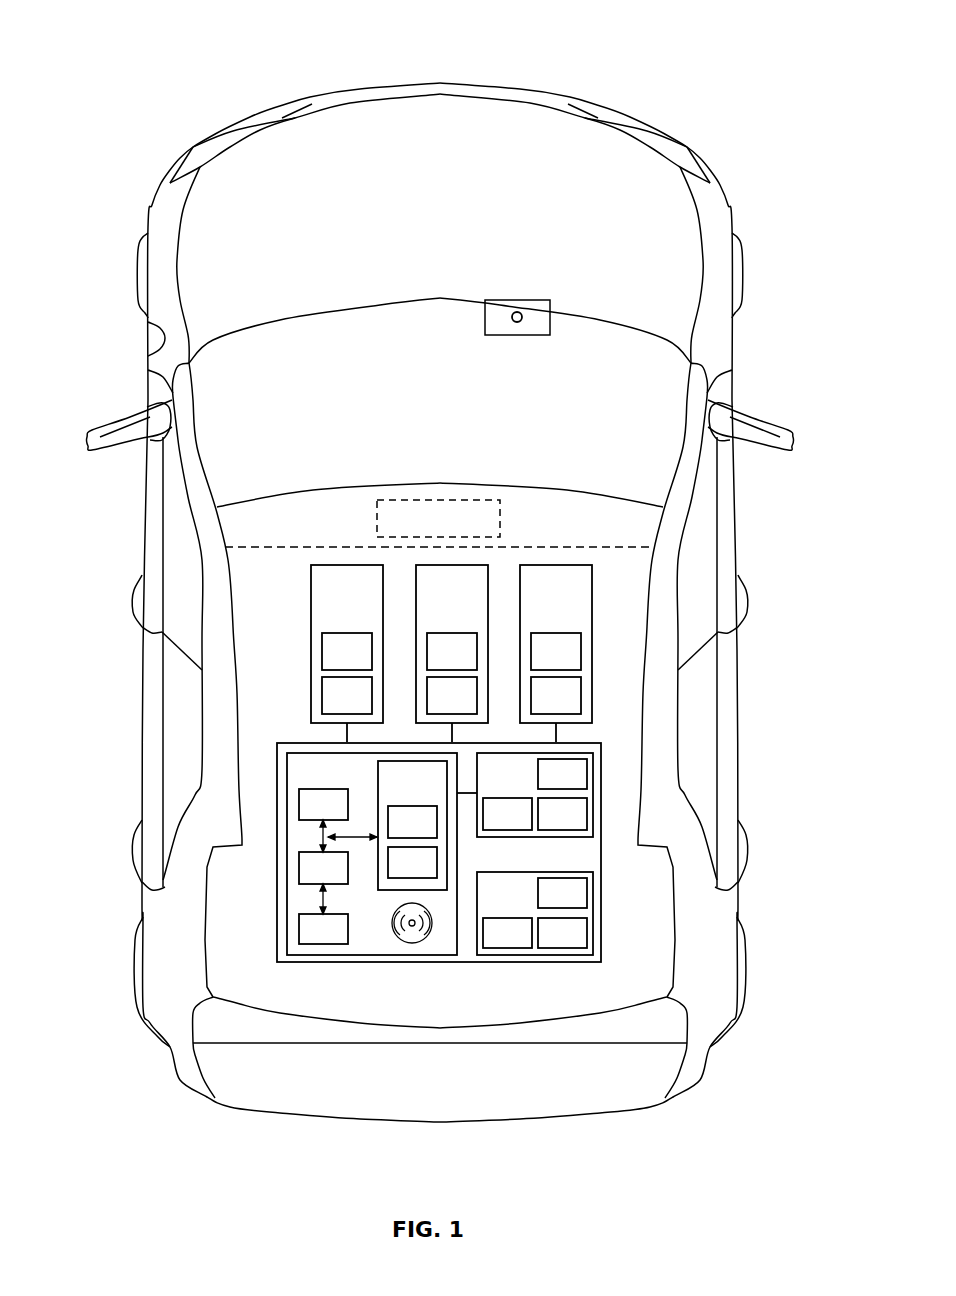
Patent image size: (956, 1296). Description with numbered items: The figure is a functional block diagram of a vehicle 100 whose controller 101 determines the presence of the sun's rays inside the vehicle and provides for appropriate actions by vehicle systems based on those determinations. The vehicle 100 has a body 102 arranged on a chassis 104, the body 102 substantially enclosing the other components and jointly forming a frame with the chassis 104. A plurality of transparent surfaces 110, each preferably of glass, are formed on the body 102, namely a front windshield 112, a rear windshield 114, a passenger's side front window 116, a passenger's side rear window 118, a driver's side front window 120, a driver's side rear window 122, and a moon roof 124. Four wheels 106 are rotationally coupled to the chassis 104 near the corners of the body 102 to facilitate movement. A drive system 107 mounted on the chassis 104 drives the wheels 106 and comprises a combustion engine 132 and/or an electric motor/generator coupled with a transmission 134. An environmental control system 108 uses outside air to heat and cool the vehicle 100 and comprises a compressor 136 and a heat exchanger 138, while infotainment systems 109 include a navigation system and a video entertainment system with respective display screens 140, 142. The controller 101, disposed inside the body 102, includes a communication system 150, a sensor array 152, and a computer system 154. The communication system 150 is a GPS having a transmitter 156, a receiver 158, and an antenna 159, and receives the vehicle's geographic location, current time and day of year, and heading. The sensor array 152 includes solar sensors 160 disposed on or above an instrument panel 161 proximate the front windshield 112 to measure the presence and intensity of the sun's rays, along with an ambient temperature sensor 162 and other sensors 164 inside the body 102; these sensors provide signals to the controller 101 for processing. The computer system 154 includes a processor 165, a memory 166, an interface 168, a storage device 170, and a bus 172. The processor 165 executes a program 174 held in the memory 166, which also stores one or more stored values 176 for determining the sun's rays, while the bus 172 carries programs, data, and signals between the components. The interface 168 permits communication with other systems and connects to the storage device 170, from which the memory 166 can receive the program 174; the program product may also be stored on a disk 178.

The vehicle 100 is at (168, 38).
The controller 101 is at (300, 742).
The body 102 is at (160, 335).
The chassis 104 is at (345, 548).
The wheels 106 is at (143, 270).
The drive system 107 is at (326, 596).
The environmental control system 108 is at (431, 596).
The infotainment systems 109 is at (535, 596).
The transparent surfaces 110 is at (444, 668).
The front windshield 112 is at (323, 353).
The rear windshield 114 is at (535, 1033).
The passenger's side front window 116 is at (700, 565).
The passenger's side rear window 118 is at (700, 742).
The driver's side front window 120 is at (180, 567).
The driver's side rear window 122 is at (180, 742).
The moon roof 124 is at (396, 530).
The combustion engine 132 is at (326, 663).
The transmission 134 is at (326, 707).
The compressor 136 is at (431, 663).
The heat exchanger 138 is at (431, 707).
The display screen 140 is at (535, 663).
The display screen 142 is at (535, 707).
The communication system 150 is at (482, 778).
The sensor array 152 is at (482, 898).
The computer system 154 is at (302, 778).
The transmitter 156 is at (529, 827).
The receiver 158 is at (584, 827).
The antenna 159 is at (584, 786).
The solar sensors 160 is at (517, 311).
The instrument panel 161 is at (515, 335).
The ambient temperature sensor 162 is at (584, 946).
The other sensors 164 is at (584, 905).
The processor 165 is at (345, 817).
The memory 166 is at (392, 788).
The interface 168 is at (345, 881).
The storage device 170 is at (345, 941).
The bus 172 is at (362, 840).
The program 174 is at (434, 875).
The stored values 176 is at (434, 835).
The disk 178 is at (413, 944).